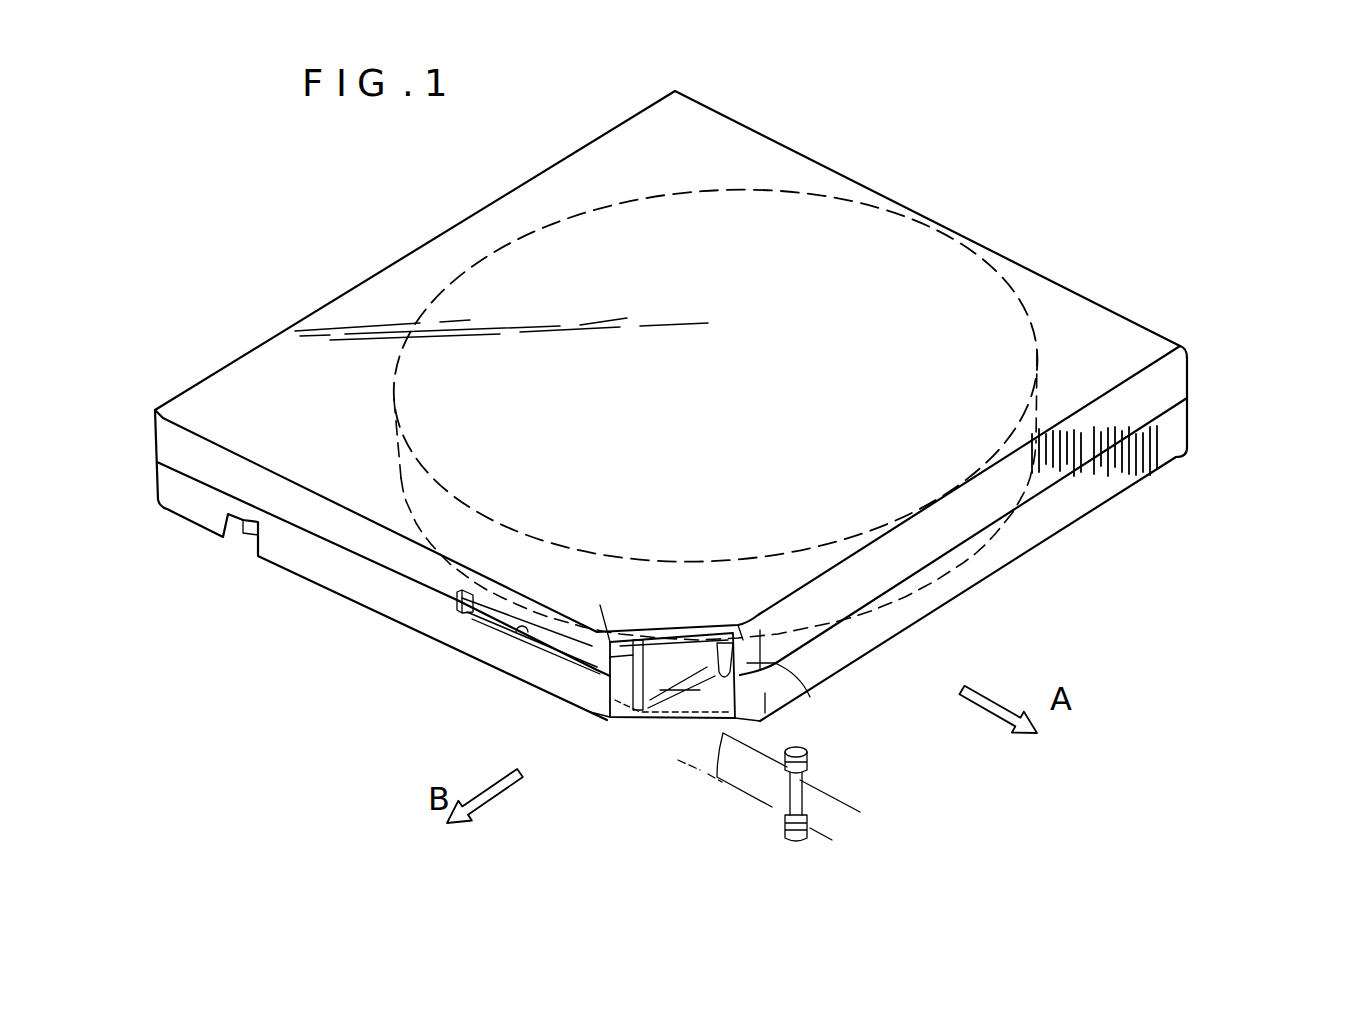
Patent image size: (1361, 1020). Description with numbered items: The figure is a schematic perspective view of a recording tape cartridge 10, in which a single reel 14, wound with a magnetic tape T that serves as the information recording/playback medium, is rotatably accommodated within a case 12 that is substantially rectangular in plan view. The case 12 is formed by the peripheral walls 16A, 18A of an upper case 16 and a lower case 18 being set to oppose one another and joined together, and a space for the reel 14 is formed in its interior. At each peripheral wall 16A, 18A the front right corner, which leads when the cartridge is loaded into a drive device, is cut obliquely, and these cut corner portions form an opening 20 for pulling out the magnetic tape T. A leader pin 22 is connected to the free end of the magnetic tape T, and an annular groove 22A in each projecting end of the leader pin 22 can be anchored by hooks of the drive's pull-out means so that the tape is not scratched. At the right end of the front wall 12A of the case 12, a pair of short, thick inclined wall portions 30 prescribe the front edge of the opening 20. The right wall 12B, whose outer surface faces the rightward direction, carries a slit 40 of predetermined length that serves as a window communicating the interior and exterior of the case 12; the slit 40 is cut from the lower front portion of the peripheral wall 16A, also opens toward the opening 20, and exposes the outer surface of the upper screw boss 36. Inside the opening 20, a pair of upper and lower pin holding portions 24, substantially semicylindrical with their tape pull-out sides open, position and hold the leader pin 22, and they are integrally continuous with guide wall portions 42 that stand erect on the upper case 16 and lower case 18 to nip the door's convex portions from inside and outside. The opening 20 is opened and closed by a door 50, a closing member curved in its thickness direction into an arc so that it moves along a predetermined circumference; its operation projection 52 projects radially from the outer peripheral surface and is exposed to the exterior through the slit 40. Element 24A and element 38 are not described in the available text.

The recording tape cartridge 10 is at (744, 476).
The case 12 is at (744, 361).
The front wall 12A is at (1134, 532).
The right wall 12B is at (256, 590).
The reel 14 is at (793, 223).
The upper case 16 is at (1187, 363).
The peripheral wall of the upper case 16A is at (1010, 507).
The lower case 18 is at (1262, 340).
The peripheral wall of the lower case 18A is at (1020, 557).
The opening 20 is at (667, 648).
The leader pin 22 is at (847, 812).
The annular groove 22A is at (812, 838).
The pin holding portion 24 is at (780, 652).
The hole 24A is at (721, 665).
The inclined wall portion 30 is at (755, 702).
The screw boss 36 is at (600, 677).
The slider bottom 38 is at (618, 720).
The slit 40 is at (505, 642).
The guide wall portion 42 is at (733, 723).
The door 50 is at (478, 605).
The operation projection 52 is at (478, 598).
The magnetic tape T is at (743, 788).